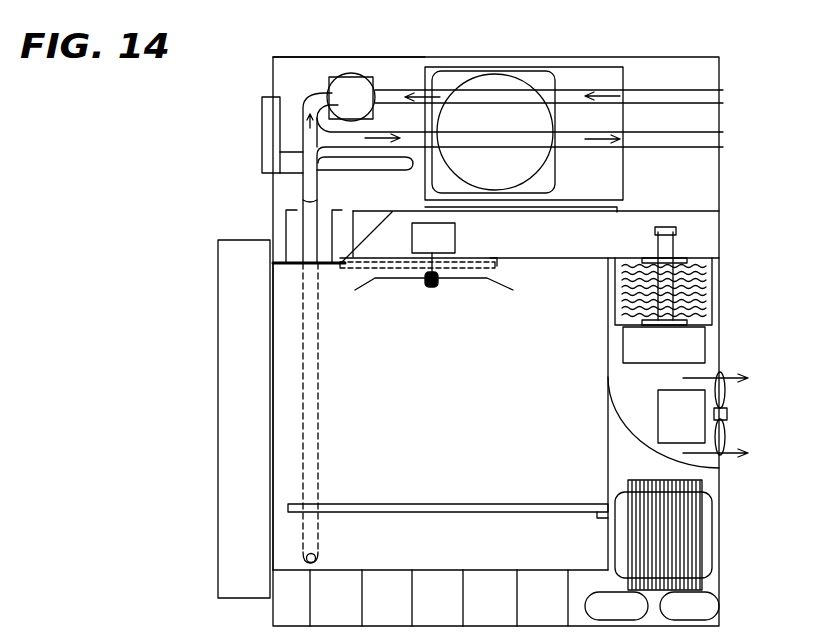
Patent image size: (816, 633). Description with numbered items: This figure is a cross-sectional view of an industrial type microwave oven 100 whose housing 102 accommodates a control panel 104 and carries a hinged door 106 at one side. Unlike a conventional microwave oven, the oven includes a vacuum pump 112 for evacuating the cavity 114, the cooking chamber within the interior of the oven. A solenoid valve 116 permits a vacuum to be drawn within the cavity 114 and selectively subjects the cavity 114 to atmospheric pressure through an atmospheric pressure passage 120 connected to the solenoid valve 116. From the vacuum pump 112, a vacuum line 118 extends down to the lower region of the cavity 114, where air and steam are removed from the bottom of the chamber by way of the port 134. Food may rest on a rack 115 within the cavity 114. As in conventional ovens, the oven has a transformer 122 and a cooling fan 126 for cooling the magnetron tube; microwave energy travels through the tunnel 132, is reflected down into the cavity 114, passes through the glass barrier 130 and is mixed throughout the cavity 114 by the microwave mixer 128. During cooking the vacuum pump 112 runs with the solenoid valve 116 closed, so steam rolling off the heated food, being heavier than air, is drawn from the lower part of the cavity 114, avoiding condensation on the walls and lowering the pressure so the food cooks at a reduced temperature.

The microwave oven 100 is at (520, 43).
The housing 102 is at (335, 57).
The control panel 104 is at (263, 127).
The door 106 is at (218, 402).
The vacuum pump 112 is at (582, 67).
The cavity 114 is at (283, 302).
The rack 115 is at (448, 503).
The solenoid valve 116 is at (367, 92).
The vacuum line 118 is at (365, 158).
The atmospheric pressure passage 120 is at (663, 88).
The transformer 122 is at (712, 540).
The cooling fan 126 is at (728, 403).
The microwave mixer 128 is at (490, 280).
The glass barrier 130 is at (353, 270).
The tunnel 132 is at (573, 250).
The port 134 is at (320, 558).